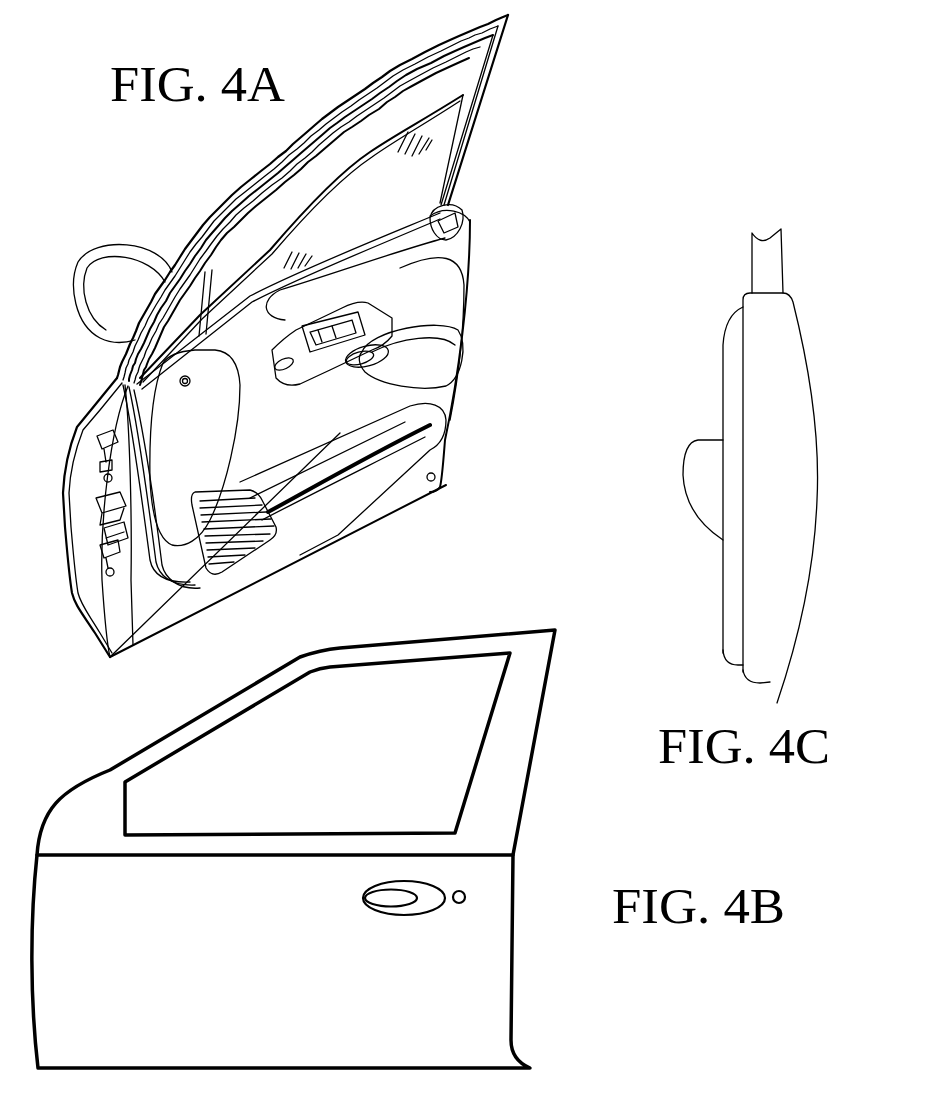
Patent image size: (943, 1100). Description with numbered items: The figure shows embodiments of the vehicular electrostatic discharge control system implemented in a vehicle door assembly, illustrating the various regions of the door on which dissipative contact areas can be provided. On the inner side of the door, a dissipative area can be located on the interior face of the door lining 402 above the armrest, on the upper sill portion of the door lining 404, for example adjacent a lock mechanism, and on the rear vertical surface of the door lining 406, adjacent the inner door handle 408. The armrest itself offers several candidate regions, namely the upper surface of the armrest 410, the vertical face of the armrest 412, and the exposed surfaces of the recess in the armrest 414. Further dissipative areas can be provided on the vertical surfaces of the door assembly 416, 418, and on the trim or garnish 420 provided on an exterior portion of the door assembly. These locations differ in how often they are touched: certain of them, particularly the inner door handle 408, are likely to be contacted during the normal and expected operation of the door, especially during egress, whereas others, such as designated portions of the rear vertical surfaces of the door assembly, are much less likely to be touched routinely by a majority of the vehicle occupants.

In FIG. 4A, the interior face of the door lining 402 is at (440, 302).
In FIG. 4A, the upper sill portion of the door lining 404 is at (423, 247).
In FIG. 4C, the rear vertical surface of the door lining 406 is at (735, 362).
In FIG. 4A, the inner door handle 408 is at (322, 328).
In FIG. 4A, the upper surface of the armrest 410 is at (420, 335).
In FIG. 4A, the vertical face of the armrest 412 is at (428, 358).
In FIG. 4A, the recess in the armrest 414 is at (367, 360).
In FIG. 4C, the vertical surface of the door assembly 416 is at (780, 420).
In FIG. 4C, the vertical surface of the door assembly 418 is at (775, 490).
In FIG. 4B, the trim or garnish 420 is at (518, 700).